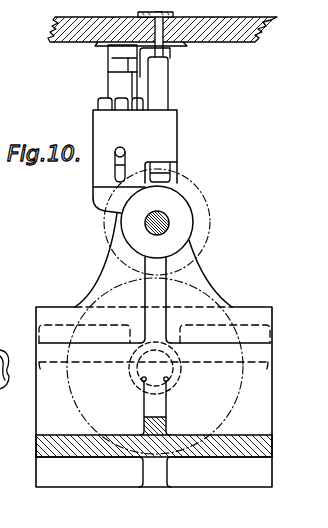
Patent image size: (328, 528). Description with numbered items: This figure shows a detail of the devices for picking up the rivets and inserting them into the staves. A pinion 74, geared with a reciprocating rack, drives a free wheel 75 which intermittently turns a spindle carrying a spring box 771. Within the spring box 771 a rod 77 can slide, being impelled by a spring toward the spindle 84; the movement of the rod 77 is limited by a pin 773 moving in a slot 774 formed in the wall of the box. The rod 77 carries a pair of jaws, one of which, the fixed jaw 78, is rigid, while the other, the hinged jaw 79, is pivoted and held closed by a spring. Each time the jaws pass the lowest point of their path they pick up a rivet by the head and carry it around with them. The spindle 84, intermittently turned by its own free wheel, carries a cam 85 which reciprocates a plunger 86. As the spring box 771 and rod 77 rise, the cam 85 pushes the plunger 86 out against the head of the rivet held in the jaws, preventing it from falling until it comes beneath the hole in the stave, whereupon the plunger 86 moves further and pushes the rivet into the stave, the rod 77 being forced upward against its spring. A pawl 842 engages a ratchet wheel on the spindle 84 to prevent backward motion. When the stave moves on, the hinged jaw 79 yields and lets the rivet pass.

The pinion 74 is at (72, 398).
The free wheel 75 is at (211, 220).
The rod 77 is at (120, 84).
The fixed jaw 78 is at (120, 50).
The hinged jaw 79 is at (173, 48).
The spindle 84 is at (146, 224).
The cam 85 is at (167, 198).
The plunger 86 is at (158, 92).
The spring box 771 is at (135, 154).
The pin 773 is at (125, 152).
The slot 774 is at (117, 168).
The pawl 842 is at (15, 345).